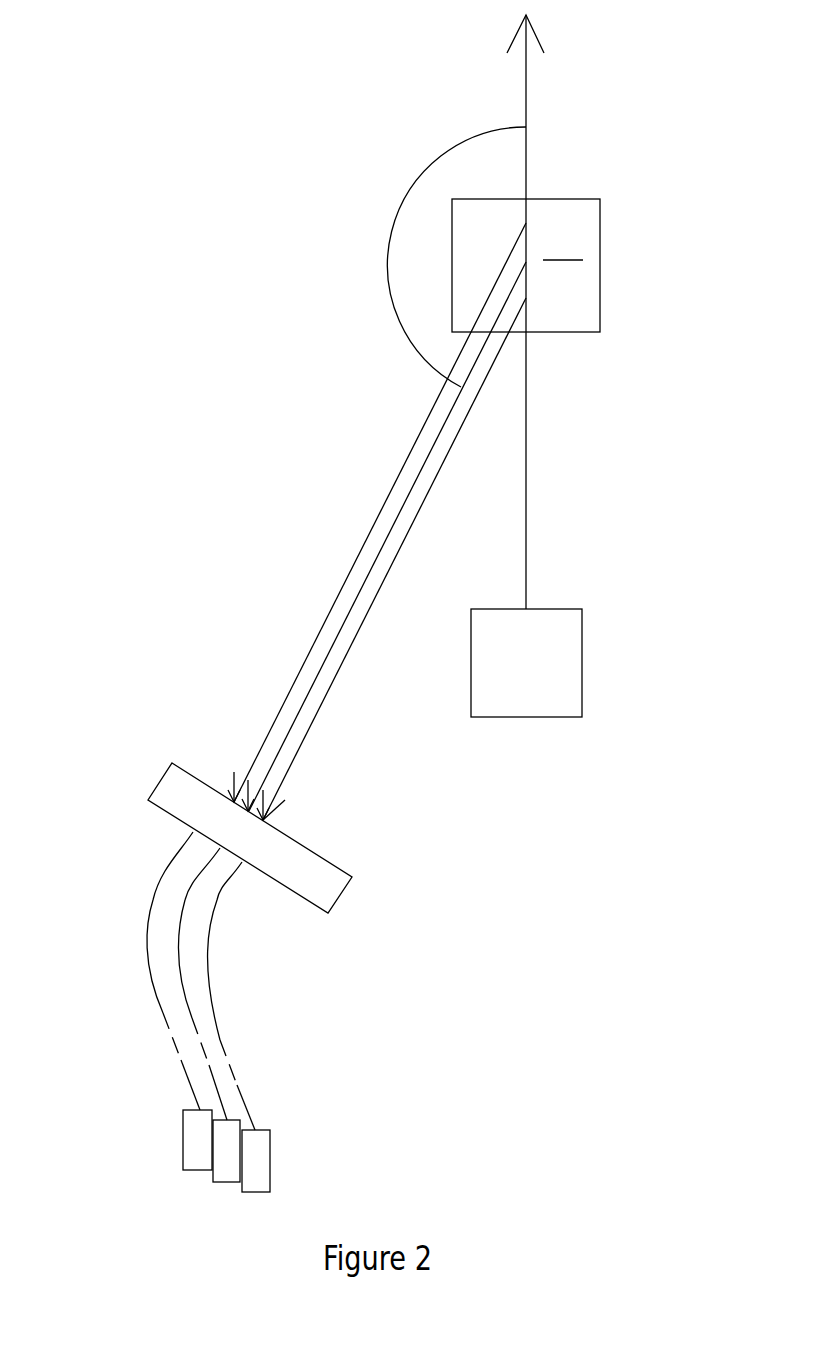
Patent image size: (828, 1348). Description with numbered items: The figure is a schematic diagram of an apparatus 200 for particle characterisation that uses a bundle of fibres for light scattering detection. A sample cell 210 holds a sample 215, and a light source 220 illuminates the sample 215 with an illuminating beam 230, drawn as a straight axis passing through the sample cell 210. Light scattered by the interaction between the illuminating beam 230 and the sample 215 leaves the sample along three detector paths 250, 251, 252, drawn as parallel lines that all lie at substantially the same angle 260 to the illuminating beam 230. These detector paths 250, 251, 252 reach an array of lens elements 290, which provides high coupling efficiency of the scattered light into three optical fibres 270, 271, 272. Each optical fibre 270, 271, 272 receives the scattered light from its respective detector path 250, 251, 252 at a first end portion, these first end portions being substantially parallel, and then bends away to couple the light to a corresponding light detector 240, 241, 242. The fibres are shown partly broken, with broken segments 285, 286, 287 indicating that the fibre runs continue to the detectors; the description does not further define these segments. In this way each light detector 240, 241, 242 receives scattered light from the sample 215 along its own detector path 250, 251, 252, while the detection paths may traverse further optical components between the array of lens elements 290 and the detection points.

The apparatus 200 is at (303, 170).
The sample cell 210 is at (600, 276).
The sample 215 is at (563, 244).
The light source 220 is at (582, 661).
The illuminating beam 230 is at (527, 457).
The light detector 240 is at (183, 1140).
The light detector 241 is at (225, 1182).
The light detector 242 is at (270, 1162).
The detector path 250 is at (320, 630).
The detector path 251 is at (377, 555).
The detector path 252 is at (433, 482).
The angle 260 is at (400, 327).
The optical fibre 270 is at (168, 873).
The optical fibre 271 is at (176, 930).
The optical fibre 272 is at (205, 943).
The first dashed path segment 285 is at (178, 1058).
The second dashed path segment 286 is at (205, 1053).
The third dashed path segment 287 is at (223, 1038).
The array of lens elements 290 is at (159, 783).